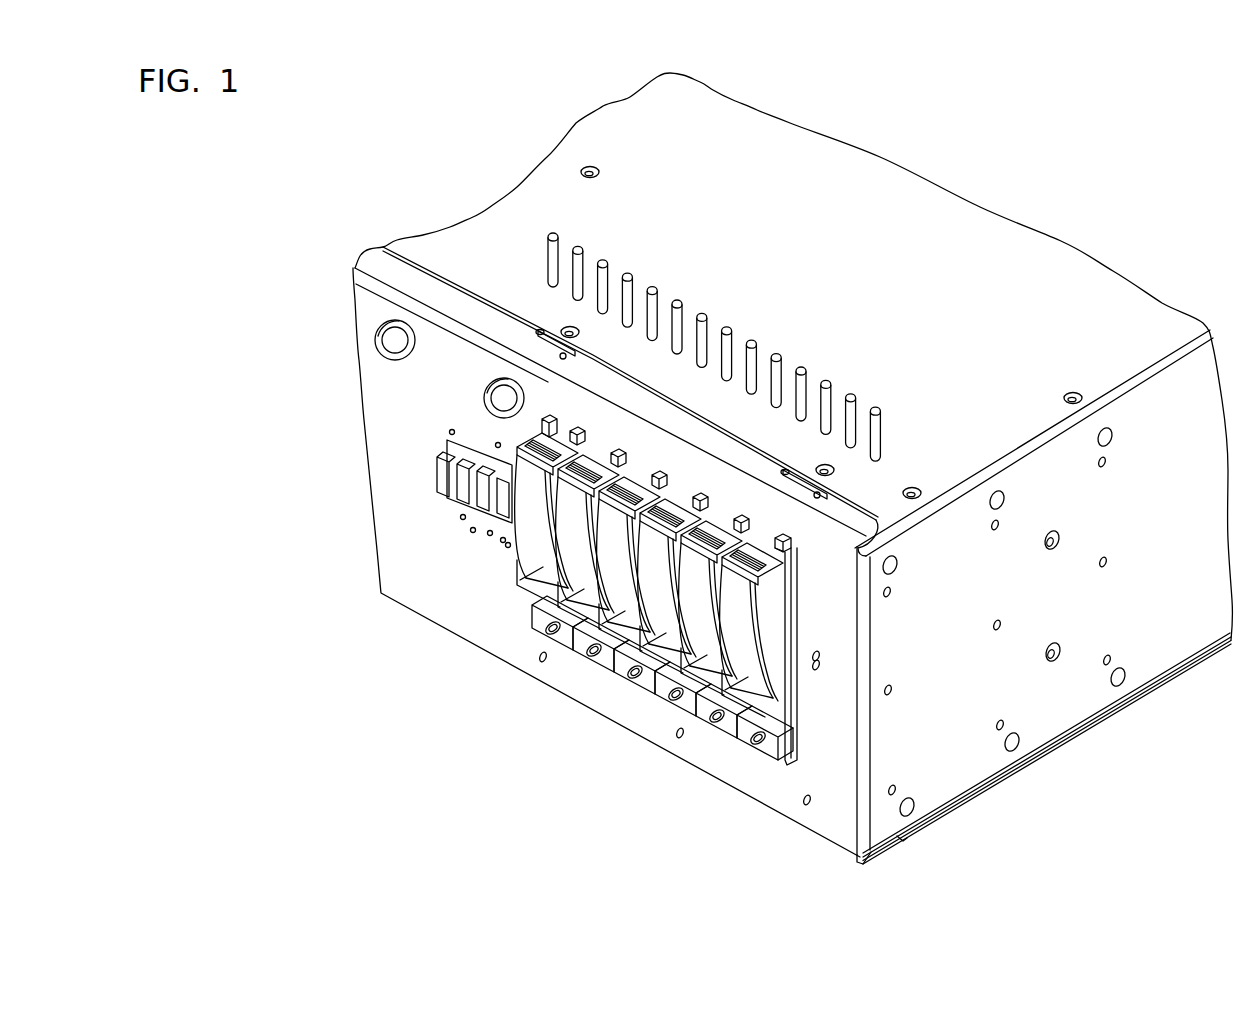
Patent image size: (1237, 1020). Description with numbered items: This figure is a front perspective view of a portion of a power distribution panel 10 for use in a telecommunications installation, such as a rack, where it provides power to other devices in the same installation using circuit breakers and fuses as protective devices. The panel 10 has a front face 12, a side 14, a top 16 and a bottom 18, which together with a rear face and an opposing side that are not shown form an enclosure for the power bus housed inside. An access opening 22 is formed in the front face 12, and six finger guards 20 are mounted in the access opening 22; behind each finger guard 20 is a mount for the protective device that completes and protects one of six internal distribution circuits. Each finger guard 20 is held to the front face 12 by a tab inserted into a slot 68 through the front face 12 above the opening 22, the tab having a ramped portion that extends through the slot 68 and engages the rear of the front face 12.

The power distribution panel 10 is at (1078, 228).
The front face 12 is at (438, 588).
The side 14 is at (1185, 488).
The top 16 is at (990, 356).
The bottom 18 is at (1084, 733).
The finger guards 20 is at (555, 650).
The access opening 22 is at (804, 607).
The slot 68 is at (563, 425).